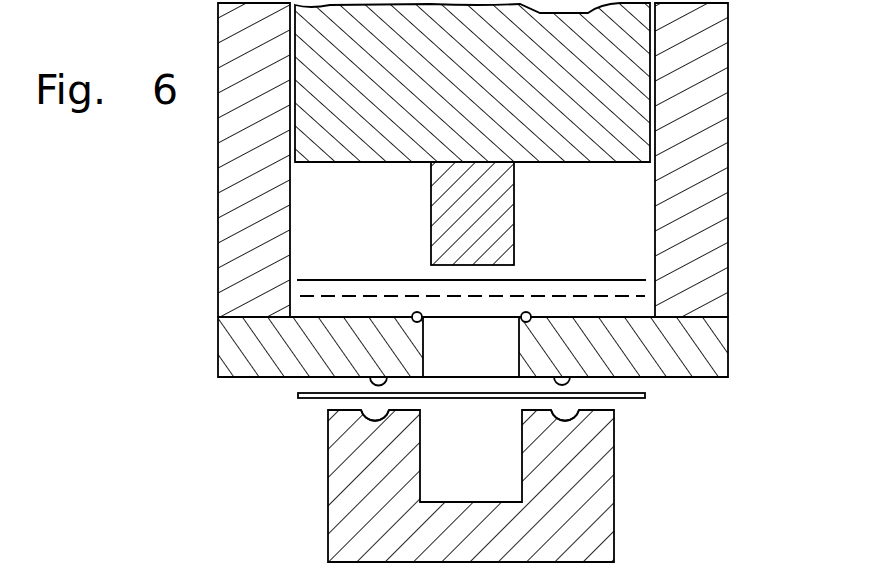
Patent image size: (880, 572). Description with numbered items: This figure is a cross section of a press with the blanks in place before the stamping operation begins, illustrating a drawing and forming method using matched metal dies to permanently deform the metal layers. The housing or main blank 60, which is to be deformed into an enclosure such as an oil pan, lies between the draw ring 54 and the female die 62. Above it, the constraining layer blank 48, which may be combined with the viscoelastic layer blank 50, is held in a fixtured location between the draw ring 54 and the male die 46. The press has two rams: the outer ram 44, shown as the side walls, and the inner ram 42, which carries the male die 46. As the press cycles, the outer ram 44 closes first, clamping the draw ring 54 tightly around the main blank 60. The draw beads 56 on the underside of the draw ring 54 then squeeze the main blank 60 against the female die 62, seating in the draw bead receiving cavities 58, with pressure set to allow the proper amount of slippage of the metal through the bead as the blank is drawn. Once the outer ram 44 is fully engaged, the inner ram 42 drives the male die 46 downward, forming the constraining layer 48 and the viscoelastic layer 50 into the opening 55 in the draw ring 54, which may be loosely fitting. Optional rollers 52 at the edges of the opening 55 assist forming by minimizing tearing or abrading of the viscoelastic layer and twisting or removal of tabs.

The inner ram 42 is at (637, 88).
The outer ram 44 is at (237, 153).
The male die 46 is at (500, 243).
The constraining layer blank 48 is at (610, 280).
The viscoelastic layer blank 50 is at (625, 298).
The rollers 52 is at (412, 315).
The draw ring 54 is at (707, 361).
The opening 55 is at (445, 352).
The draw beads 56 is at (380, 386).
The draw bead receiving cavities 58 is at (378, 419).
The main blank 60 is at (300, 396).
The female die 62 is at (603, 528).